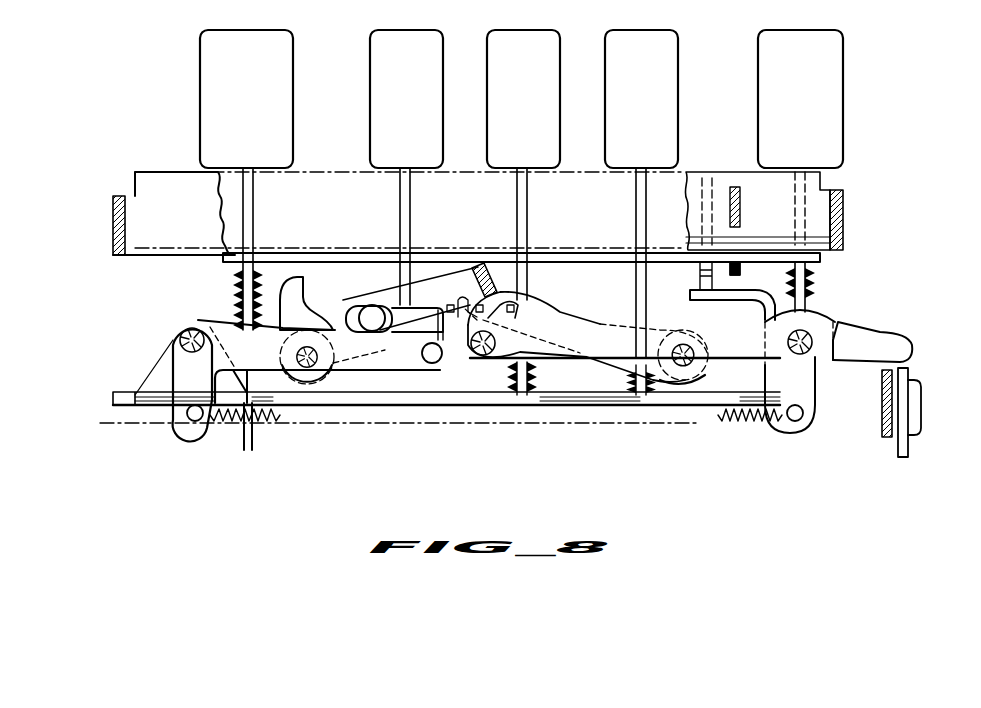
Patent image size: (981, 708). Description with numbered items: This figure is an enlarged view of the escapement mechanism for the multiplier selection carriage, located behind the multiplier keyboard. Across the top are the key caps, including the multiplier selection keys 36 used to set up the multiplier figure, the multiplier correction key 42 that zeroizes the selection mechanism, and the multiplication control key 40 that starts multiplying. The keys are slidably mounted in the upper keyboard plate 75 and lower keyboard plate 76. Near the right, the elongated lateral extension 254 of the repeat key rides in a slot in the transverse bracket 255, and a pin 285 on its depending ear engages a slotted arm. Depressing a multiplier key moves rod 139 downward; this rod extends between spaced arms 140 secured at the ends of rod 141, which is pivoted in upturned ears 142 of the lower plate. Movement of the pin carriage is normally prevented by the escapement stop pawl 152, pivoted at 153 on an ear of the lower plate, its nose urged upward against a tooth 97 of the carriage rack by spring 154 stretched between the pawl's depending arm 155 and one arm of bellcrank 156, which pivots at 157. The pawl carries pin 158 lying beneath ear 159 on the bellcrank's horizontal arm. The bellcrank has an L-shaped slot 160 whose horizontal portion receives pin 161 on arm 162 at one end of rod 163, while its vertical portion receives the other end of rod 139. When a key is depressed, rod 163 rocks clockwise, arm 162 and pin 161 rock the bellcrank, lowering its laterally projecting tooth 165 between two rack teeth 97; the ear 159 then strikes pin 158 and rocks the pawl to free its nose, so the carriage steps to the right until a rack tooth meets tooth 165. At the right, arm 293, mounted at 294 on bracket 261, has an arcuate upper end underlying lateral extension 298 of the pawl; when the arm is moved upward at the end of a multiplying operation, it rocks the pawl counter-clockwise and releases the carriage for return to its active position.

The multiplier correction key 42 is at (283, 40).
The multiplier selection keys 36 is at (617, 43).
The multiplication control key 40 is at (775, 38).
The transverse bracket 255 is at (690, 182).
The elongated lateral extension 254 is at (740, 205).
The pin 285 is at (700, 266).
The upper keyboard plate 75 is at (458, 260).
The tooth 165 is at (510, 262).
The arm 162 is at (300, 312).
The pin 161 is at (370, 314).
The L-shaped slot 160 is at (425, 312).
The teeth 97 is at (450, 306).
The ear 159 is at (521, 296).
The spaced arms 140 is at (552, 314).
The bellcrank 156 is at (228, 324).
The pivot 157 is at (178, 340).
The rod 163 is at (295, 356).
The rod 139 is at (421, 355).
The pin 158 is at (486, 358).
The escapement stop pawl 152 is at (545, 355).
The rod 141 is at (708, 345).
The upturned ears 142 is at (703, 385).
The pivot 153 is at (815, 336).
The lateral extension 298 is at (885, 342).
The depending arm 155 is at (806, 384).
The spring 154 is at (740, 420).
The lower keyboard plate 76 is at (537, 400).
The bracket 261 is at (884, 432).
The arm 293 is at (910, 447).
The mounting 294 is at (920, 400).